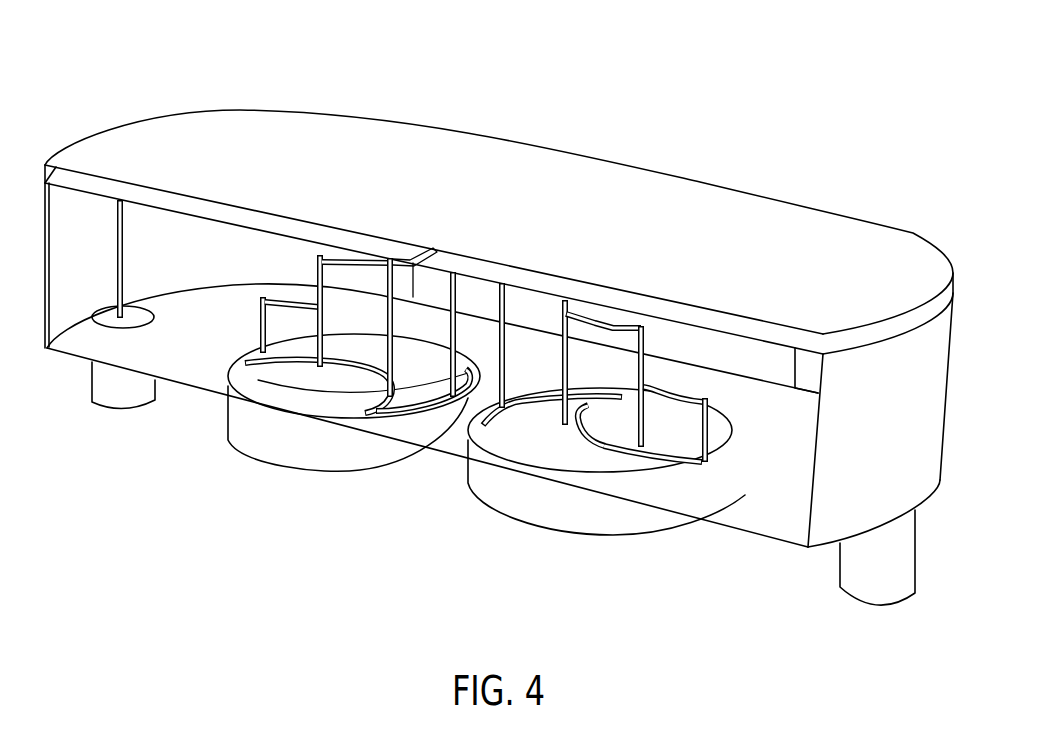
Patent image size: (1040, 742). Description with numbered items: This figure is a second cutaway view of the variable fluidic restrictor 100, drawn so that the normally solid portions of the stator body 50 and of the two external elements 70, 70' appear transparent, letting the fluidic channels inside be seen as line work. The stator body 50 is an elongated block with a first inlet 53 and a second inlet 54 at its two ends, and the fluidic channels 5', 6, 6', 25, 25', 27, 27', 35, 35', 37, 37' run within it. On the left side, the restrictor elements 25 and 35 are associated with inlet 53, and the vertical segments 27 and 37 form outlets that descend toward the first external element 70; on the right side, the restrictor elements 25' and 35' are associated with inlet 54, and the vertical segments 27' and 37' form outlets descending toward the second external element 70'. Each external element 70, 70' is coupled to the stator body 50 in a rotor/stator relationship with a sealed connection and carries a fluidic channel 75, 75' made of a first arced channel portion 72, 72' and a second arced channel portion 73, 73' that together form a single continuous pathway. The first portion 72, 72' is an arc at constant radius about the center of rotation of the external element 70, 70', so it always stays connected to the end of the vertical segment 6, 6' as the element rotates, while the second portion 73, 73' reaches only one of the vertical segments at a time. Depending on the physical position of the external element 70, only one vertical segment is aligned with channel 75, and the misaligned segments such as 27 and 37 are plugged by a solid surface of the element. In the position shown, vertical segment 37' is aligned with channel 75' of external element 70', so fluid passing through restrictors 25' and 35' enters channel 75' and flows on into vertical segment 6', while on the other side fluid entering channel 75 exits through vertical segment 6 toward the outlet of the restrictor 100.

The variable fluidic restrictor 100 is at (97, 90).
The stator body 50 is at (912, 247).
The inlet 53 is at (107, 388).
The inlet 54 is at (897, 557).
The fluidic channel 5' is at (113, 264).
The vertical segment 6 is at (469, 303).
The vertical segment 6' is at (526, 312).
The restrictor element 25 is at (379, 299).
The vertical segment 27 is at (295, 267).
The restrictor element 35 is at (253, 188).
The vertical segment 37 is at (233, 325).
The restrictor element 25' is at (603, 331).
The vertical segment 27' is at (669, 351).
The restrictor element 35' is at (691, 331).
The vertical segment 37' is at (744, 429).
The external element 70 is at (354, 426).
The first arced channel portion 72 is at (423, 449).
The second arced channel portion 73 is at (305, 427).
The fluidic channel 75 is at (363, 439).
The external element 70' is at (599, 465).
The first arced channel portion 72' is at (658, 517).
The second arced channel portion 73' is at (552, 492).
The fluidic channel 75' is at (612, 497).